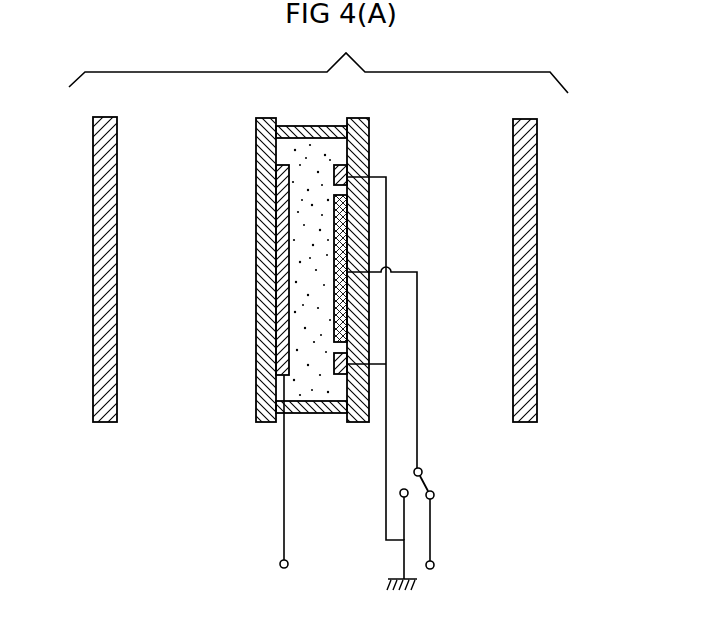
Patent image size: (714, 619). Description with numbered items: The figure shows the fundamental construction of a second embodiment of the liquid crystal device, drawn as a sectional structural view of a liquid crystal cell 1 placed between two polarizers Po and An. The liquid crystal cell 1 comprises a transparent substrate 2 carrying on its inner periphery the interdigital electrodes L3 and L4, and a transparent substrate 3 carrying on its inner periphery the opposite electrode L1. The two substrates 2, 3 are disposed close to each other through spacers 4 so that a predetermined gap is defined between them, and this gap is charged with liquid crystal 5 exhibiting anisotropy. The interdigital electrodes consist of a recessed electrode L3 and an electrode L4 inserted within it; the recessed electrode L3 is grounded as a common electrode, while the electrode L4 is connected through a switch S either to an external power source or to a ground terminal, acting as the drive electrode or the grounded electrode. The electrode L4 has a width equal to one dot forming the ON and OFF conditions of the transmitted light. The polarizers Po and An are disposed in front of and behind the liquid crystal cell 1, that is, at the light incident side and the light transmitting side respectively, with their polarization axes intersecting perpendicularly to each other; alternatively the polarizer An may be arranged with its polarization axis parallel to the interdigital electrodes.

The liquid crystal cell 1 is at (310, 330).
The transparent substrate 2 is at (360, 158).
The transparent substrate 3 is at (267, 178).
The spacers 4 is at (298, 127).
The liquid crystal 5 is at (300, 252).
The opposite electrode L1 is at (275, 230).
The recessed electrode L3 is at (340, 167).
The electrode L4 is at (337, 278).
The polarizer Po is at (97, 233).
The polarizer An is at (527, 225).
The switch S is at (427, 514).